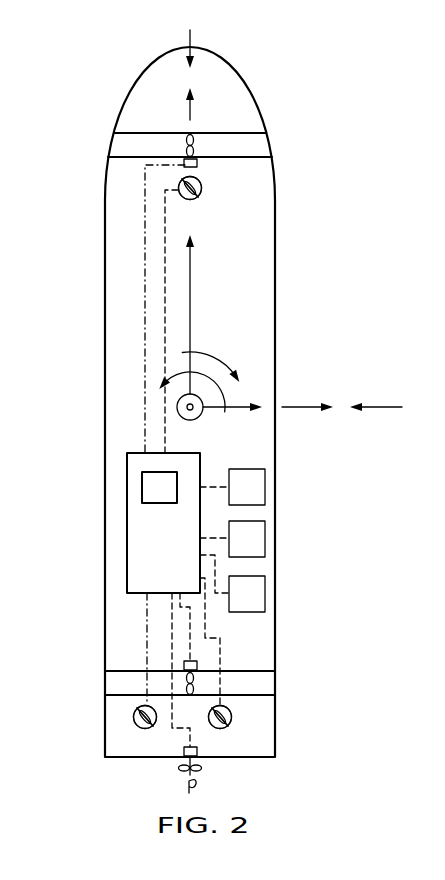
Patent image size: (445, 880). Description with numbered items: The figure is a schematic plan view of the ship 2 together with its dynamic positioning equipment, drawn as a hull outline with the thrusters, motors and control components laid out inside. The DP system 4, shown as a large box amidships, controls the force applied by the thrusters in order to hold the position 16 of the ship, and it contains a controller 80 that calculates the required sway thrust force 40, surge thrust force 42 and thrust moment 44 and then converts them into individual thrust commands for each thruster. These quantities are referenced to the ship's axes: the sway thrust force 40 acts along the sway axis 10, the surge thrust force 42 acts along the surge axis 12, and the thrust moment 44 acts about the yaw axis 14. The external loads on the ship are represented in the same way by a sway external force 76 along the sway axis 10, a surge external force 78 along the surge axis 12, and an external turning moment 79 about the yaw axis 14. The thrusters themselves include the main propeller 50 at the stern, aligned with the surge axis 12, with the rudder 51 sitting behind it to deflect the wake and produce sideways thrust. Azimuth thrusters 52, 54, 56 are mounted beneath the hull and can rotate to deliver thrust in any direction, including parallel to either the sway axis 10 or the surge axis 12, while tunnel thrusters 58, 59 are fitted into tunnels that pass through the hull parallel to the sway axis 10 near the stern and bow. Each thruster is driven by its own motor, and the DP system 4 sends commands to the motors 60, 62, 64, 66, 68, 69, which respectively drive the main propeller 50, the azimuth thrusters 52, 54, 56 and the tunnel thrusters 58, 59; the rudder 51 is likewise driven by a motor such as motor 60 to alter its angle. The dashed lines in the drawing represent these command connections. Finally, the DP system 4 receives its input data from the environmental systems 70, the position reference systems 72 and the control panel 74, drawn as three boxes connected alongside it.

The ship 2 is at (326, 85).
The DP system 4 is at (127, 535).
The sway axis 10 is at (243, 400).
The surge axis 12 is at (191, 257).
The yaw axis 14 is at (180, 418).
The position 16 is at (178, 406).
The sway thrust force 40 is at (303, 408).
The surge thrust force 42 is at (193, 113).
The thrust moment 44 is at (219, 427).
The main propeller 50 is at (177, 768).
The rudder 51 is at (198, 790).
The azimuth thruster 52 is at (134, 716).
The azimuth thruster 54 is at (214, 727).
The azimuth thruster 56 is at (201, 192).
The tunnel thruster 58 is at (194, 683).
The tunnel thruster 59 is at (185, 146).
The motor 60 is at (184, 750).
The motor 62 is at (134, 721).
The motor 64 is at (232, 714).
The motor 66 is at (194, 200).
The motor 68 is at (197, 666).
The motor 69 is at (197, 163).
The environmental systems 70 is at (265, 487).
The position reference systems 72 is at (265, 539).
The control panel 74 is at (265, 594).
The sway external force 76 is at (385, 408).
The surge external force 78 is at (193, 38).
The external turning moment 79 is at (205, 352).
The controller 80 is at (142, 488).